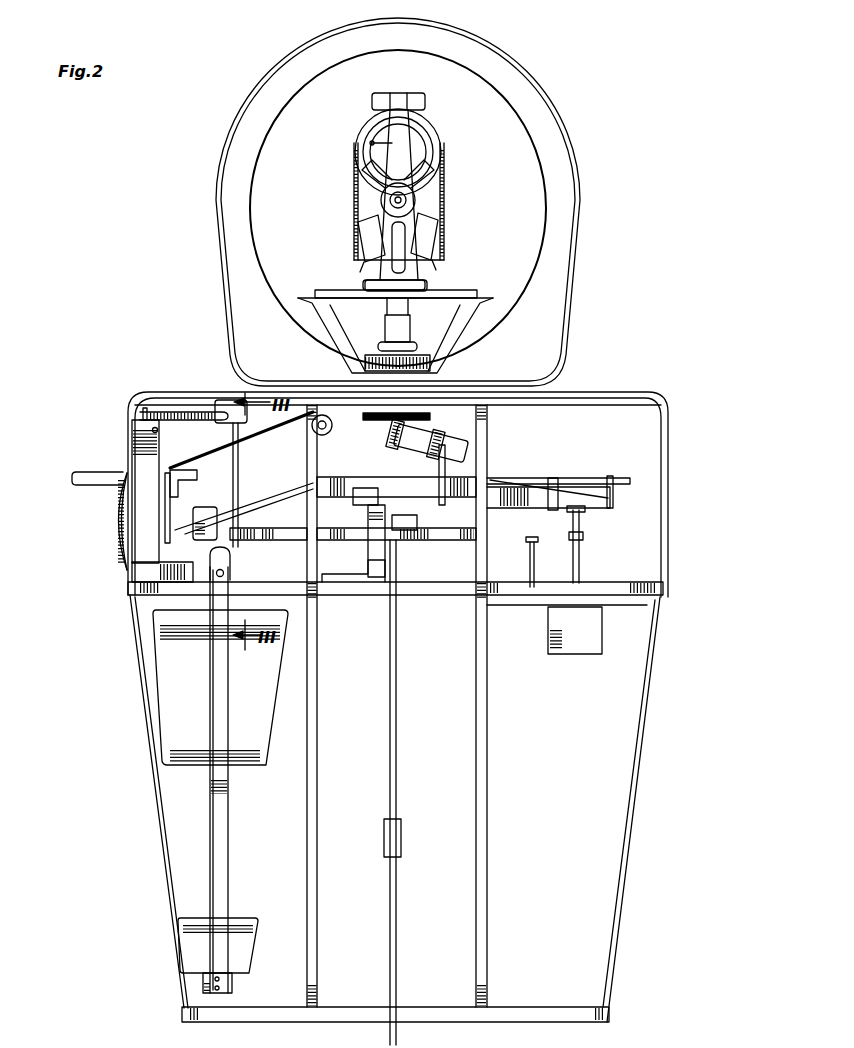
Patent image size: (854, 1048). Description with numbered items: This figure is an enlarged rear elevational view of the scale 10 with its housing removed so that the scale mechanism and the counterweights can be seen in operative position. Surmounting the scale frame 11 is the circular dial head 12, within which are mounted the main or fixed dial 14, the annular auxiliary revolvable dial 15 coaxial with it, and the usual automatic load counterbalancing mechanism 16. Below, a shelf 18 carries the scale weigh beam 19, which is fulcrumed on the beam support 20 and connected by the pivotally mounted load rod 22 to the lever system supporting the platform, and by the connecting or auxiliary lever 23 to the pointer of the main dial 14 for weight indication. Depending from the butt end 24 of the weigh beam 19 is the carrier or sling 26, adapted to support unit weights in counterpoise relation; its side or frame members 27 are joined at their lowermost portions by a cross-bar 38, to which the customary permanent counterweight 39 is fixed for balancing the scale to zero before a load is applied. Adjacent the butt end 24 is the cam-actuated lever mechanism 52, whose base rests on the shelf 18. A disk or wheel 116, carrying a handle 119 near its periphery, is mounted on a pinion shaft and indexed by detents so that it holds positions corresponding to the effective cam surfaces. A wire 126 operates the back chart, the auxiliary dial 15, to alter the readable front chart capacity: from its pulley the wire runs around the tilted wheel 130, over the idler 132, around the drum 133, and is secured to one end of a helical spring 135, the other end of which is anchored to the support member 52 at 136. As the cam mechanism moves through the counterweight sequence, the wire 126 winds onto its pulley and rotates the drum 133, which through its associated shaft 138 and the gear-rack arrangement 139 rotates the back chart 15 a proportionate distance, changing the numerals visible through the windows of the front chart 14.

The scale 10 is at (652, 330).
The scale frame 11 is at (672, 426).
The circular dial head 12 is at (580, 208).
The main or fixed dial 14 is at (556, 149).
The annular auxiliary revolvable dial 15 is at (506, 122).
The automatic load counterbalancing mechanism 16 is at (372, 165).
The shelf 18 is at (636, 592).
The scale weigh beam 19 is at (438, 535).
The beam support 20 is at (370, 546).
The beam or load rod 22 is at (397, 779).
The connecting or auxiliary lever 23 is at (446, 452).
The butt end 24 is at (286, 495).
The carrier or sling 26 is at (208, 812).
The side or frame members 27 is at (210, 860).
The cross-bar 38 is at (204, 985).
The permanent type counterweight 39 is at (190, 945).
The cam-actuated lever mechanism 52 is at (140, 455).
The disk or wheel 116 is at (116, 547).
The handle 119 is at (86, 488).
The wire 126 is at (262, 446).
The tilted wheel 130 is at (197, 473).
The idler 132 is at (326, 436).
The drum 133 is at (424, 432).
The helical spring 135 is at (183, 412).
The spring anchorage 136 is at (145, 410).
The shaft 138 is at (388, 421).
The gear-rack arrangement 139 is at (421, 364).